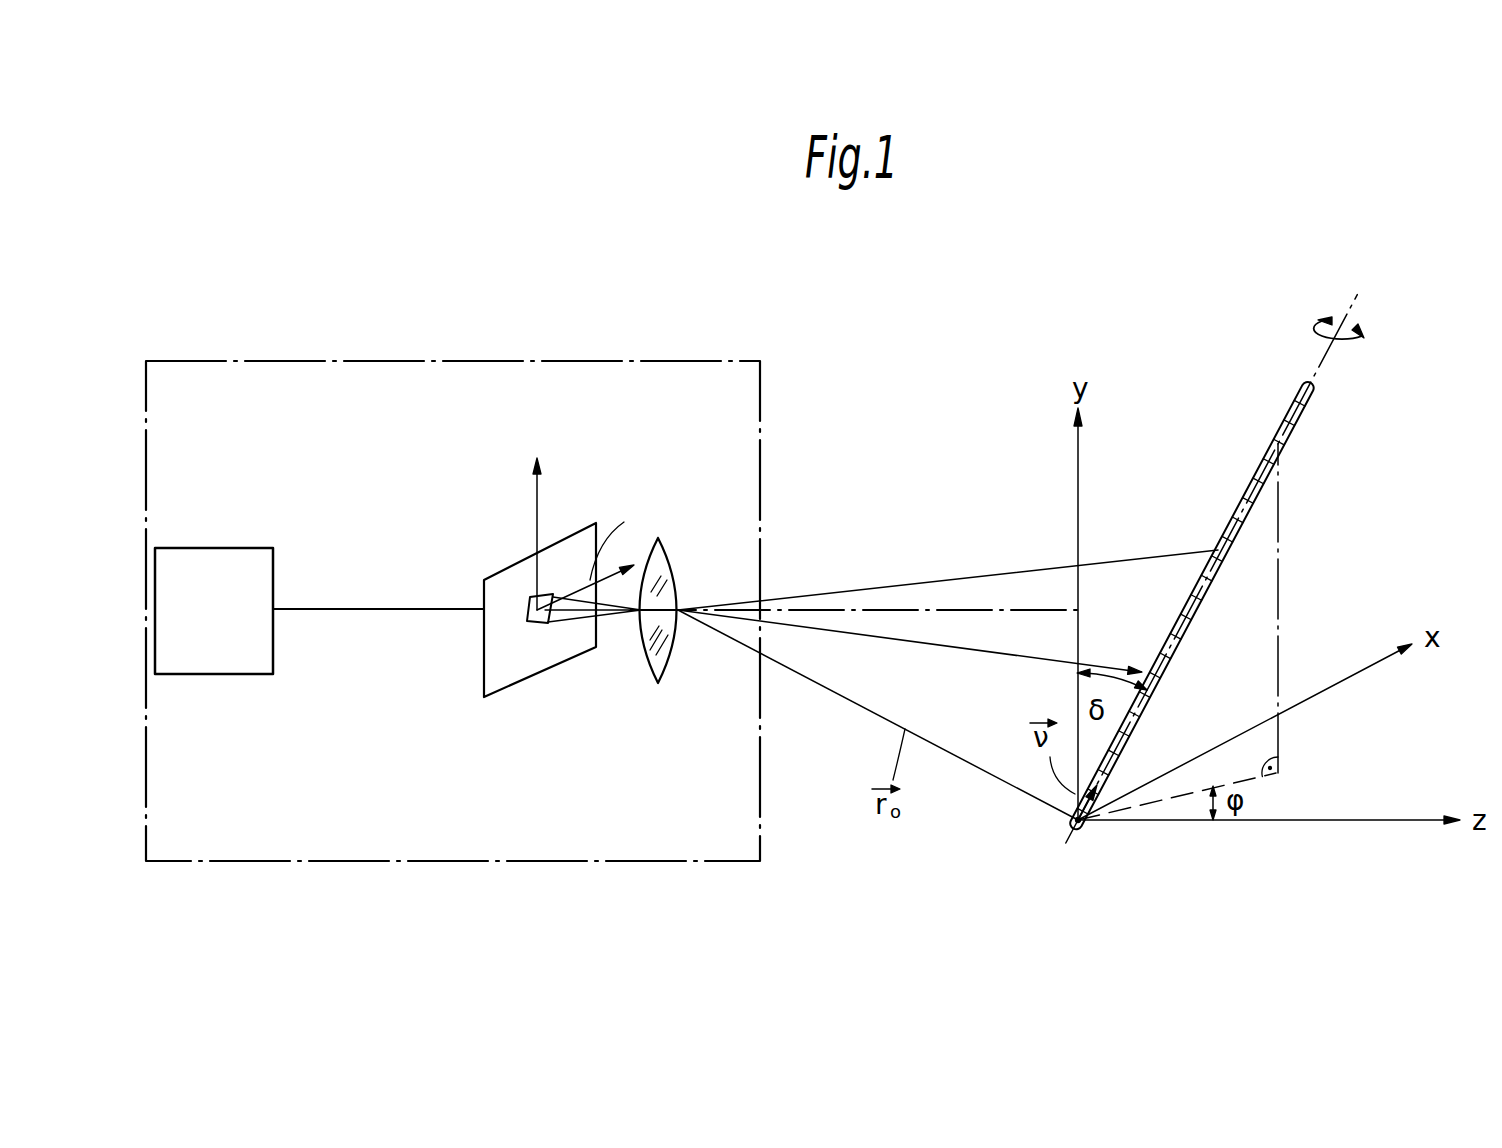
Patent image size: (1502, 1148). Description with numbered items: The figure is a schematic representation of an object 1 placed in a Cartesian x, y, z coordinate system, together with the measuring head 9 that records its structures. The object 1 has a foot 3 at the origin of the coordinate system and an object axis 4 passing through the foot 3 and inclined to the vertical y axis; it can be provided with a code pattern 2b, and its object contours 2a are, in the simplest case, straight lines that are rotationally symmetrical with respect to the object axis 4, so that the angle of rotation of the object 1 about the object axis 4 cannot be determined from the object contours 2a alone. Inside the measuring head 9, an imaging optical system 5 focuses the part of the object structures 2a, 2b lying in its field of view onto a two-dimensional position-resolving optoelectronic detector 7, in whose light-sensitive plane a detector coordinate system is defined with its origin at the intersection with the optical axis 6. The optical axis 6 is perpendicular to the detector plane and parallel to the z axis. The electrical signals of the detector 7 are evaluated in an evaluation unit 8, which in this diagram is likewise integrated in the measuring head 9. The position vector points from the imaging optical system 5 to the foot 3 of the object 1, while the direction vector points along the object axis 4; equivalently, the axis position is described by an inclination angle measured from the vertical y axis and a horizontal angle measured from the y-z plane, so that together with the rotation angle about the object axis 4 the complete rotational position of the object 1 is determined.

The object 1 is at (1307, 408).
The object contours 2a is at (1190, 630).
The code pattern 2b is at (1230, 529).
The foot 3 is at (1068, 820).
The object axis 4 is at (1315, 374).
The imaging optical system 5 is at (655, 683).
The optical axis 6 is at (851, 612).
The position-resolving optoelectronic detector 7 is at (513, 684).
The evaluation unit 8 is at (217, 638).
The measuring head 9 is at (465, 360).